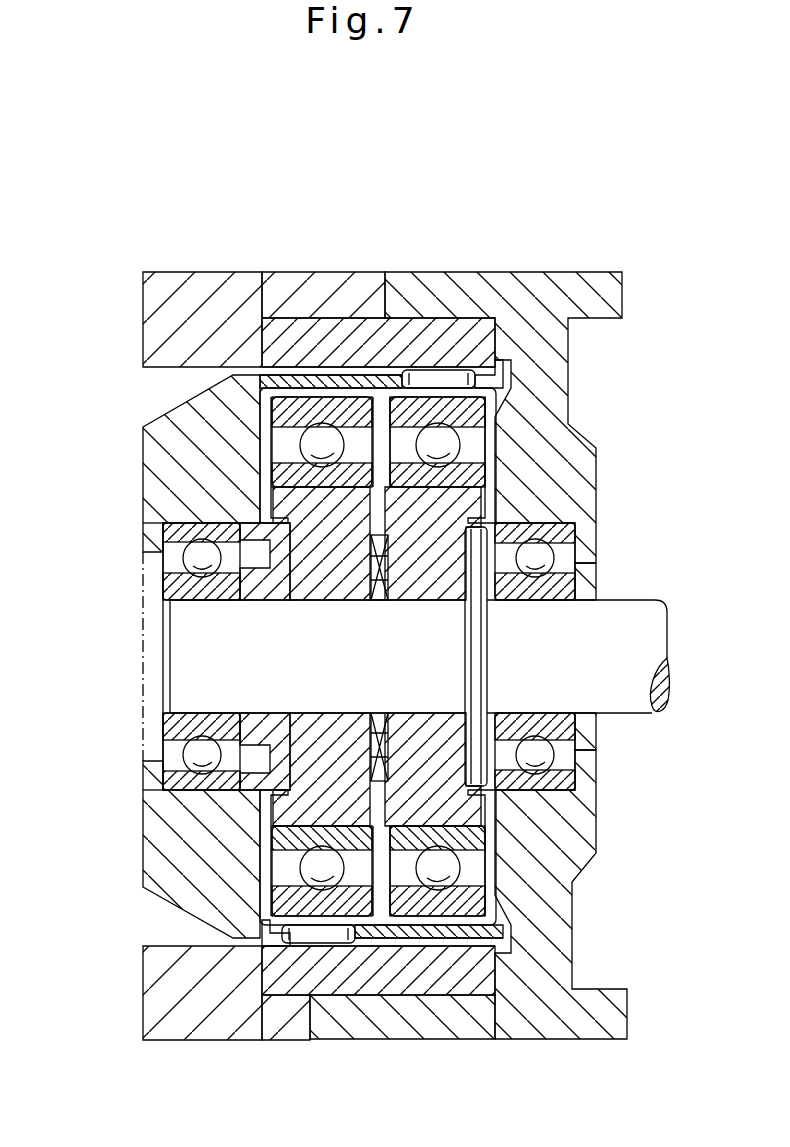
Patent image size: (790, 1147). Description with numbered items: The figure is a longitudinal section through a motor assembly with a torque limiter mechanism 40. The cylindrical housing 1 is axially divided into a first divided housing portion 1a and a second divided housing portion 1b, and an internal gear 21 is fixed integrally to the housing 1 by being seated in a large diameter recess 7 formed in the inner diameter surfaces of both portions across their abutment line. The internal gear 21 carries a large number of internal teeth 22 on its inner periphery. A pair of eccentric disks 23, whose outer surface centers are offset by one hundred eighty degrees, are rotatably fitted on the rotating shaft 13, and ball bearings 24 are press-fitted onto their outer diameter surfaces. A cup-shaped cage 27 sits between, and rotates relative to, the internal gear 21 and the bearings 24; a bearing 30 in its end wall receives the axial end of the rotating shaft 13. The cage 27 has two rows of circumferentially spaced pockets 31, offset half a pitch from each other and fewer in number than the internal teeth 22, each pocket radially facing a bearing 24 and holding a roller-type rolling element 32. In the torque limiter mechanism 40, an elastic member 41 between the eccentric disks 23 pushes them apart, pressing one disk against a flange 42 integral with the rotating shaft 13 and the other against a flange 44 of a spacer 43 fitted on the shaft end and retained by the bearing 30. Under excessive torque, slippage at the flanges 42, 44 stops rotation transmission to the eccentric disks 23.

The housing 1 is at (385, 620).
The first divided housing portion 1a is at (528, 283).
The second divided housing portion 1b is at (243, 285).
The large diameter recess 7 is at (383, 388).
The rotating shaft 13 is at (637, 707).
The internal gear 21 is at (340, 332).
The internal teeth 22 is at (292, 378).
The eccentric disks 23 is at (316, 522).
The bearings 24 is at (264, 402).
The cage 27 is at (407, 372).
The bearing 30 is at (165, 656).
The pockets 31 is at (498, 358).
The rolling element 32 is at (441, 371).
The torque limiter mechanism 40 is at (385, 606).
The elastic member 41 is at (372, 606).
The flange 42 is at (477, 636).
The spacer 43 is at (259, 598).
The flange 44 is at (275, 544).